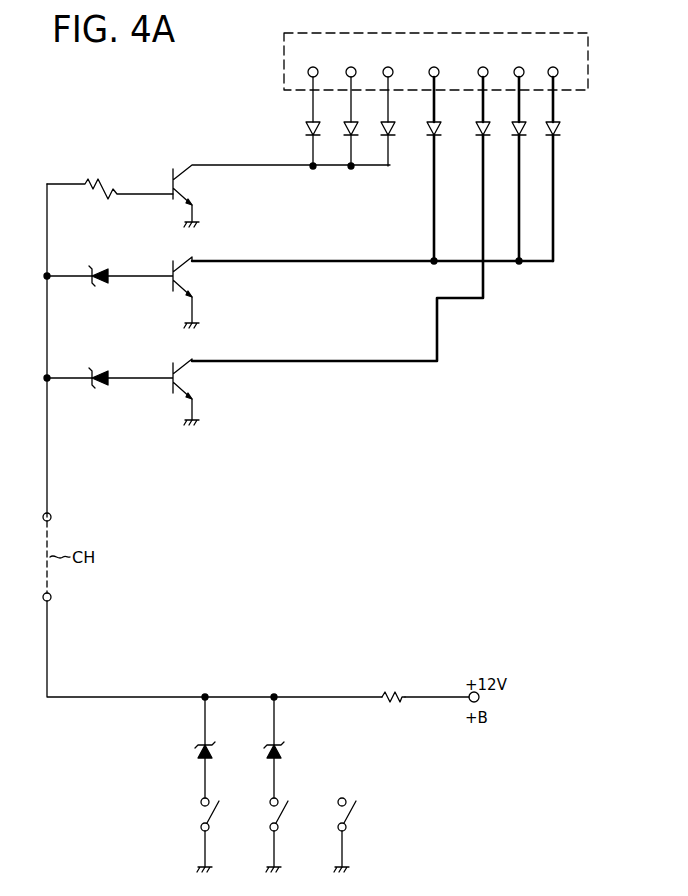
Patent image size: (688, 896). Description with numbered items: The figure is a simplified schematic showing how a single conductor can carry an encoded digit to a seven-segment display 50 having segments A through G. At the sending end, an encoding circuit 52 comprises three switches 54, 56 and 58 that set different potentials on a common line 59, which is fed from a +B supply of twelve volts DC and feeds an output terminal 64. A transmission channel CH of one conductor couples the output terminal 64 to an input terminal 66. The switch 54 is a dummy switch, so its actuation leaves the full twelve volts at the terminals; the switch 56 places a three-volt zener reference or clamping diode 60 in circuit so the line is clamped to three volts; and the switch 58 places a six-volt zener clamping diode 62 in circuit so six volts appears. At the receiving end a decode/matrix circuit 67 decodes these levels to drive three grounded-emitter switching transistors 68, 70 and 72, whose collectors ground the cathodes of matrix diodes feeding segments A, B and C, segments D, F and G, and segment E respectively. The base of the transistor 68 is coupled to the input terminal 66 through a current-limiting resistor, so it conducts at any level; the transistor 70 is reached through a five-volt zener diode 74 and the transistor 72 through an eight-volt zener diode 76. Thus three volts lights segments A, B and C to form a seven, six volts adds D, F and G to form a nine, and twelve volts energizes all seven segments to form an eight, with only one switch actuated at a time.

The seven-segment display 50 is at (588, 58).
The encoding circuit 52 is at (248, 667).
The switch 54 is at (356, 813).
The switch 56 is at (287, 813).
The switch 58 is at (218, 813).
The common line 59 is at (90, 697).
The zener reference or clamping diode 60 is at (285, 752).
The zener reference or clamping diode 62 is at (213, 742).
The output terminal 64 is at (52, 597).
The input terminal 66 is at (52, 517).
The decode/matrix circuit 67 is at (465, 328).
The switching transistor 68 is at (190, 183).
The switching transistor 70 is at (190, 276).
The switching transistor 72 is at (190, 378).
The zener diode 74 is at (103, 286).
The zener diode 76 is at (103, 388).